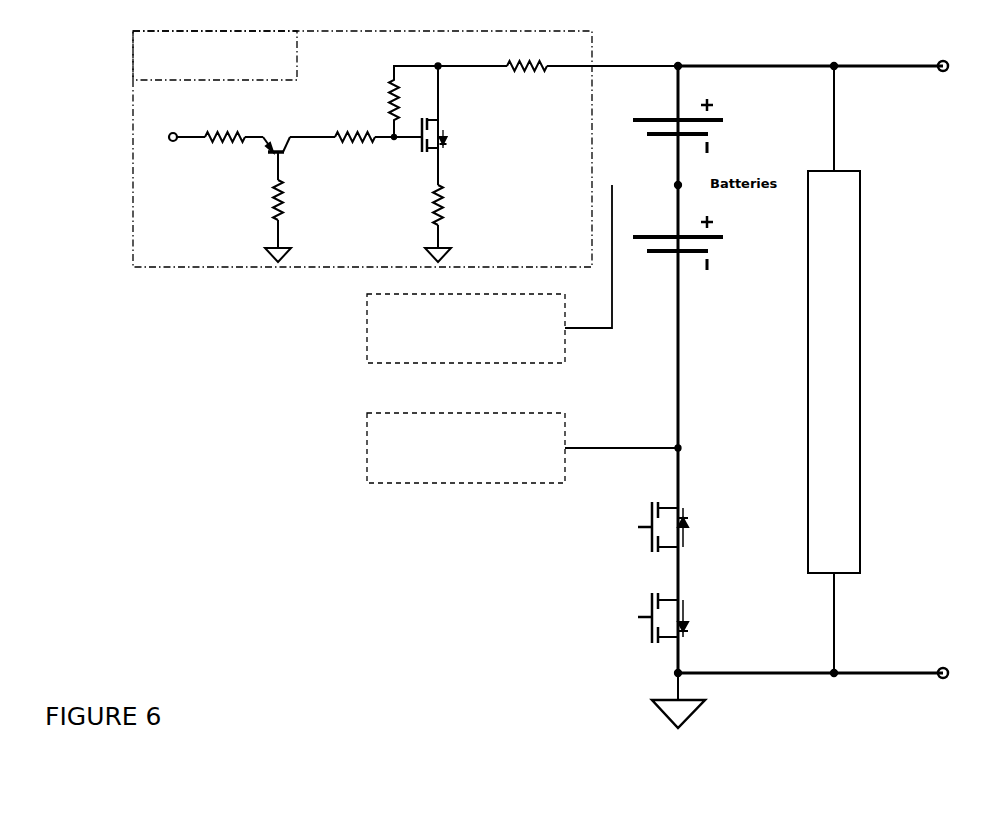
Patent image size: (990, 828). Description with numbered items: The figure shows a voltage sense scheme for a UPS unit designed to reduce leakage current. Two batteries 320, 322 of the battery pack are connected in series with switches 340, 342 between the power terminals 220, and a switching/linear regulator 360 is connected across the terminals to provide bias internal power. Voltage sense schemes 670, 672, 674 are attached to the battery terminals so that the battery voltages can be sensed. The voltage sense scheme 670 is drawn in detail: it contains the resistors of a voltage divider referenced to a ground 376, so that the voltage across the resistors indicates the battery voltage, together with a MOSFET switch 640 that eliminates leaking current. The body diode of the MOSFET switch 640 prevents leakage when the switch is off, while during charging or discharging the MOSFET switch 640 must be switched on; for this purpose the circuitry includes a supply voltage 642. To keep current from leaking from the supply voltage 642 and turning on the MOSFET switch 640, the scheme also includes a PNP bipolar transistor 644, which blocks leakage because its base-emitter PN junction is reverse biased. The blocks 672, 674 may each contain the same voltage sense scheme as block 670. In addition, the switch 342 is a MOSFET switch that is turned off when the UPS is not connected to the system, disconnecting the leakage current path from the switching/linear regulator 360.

The power terminals 220 is at (950, 62).
The battery 320 is at (716, 128).
The battery 322 is at (716, 245).
The switch 340 is at (689, 535).
The switch 342 is at (689, 635).
The switching/linear regulator 360 is at (861, 467).
The ground 376 is at (446, 262).
The MOSFET switch 640 is at (444, 152).
The VCC 642 is at (166, 140).
The PNP bipolar transistor 644 is at (284, 155).
The voltage sense scheme 670 is at (405, 149).
The voltage sense scheme 672 is at (489, 274).
The voltage sense scheme 674 is at (524, 448).